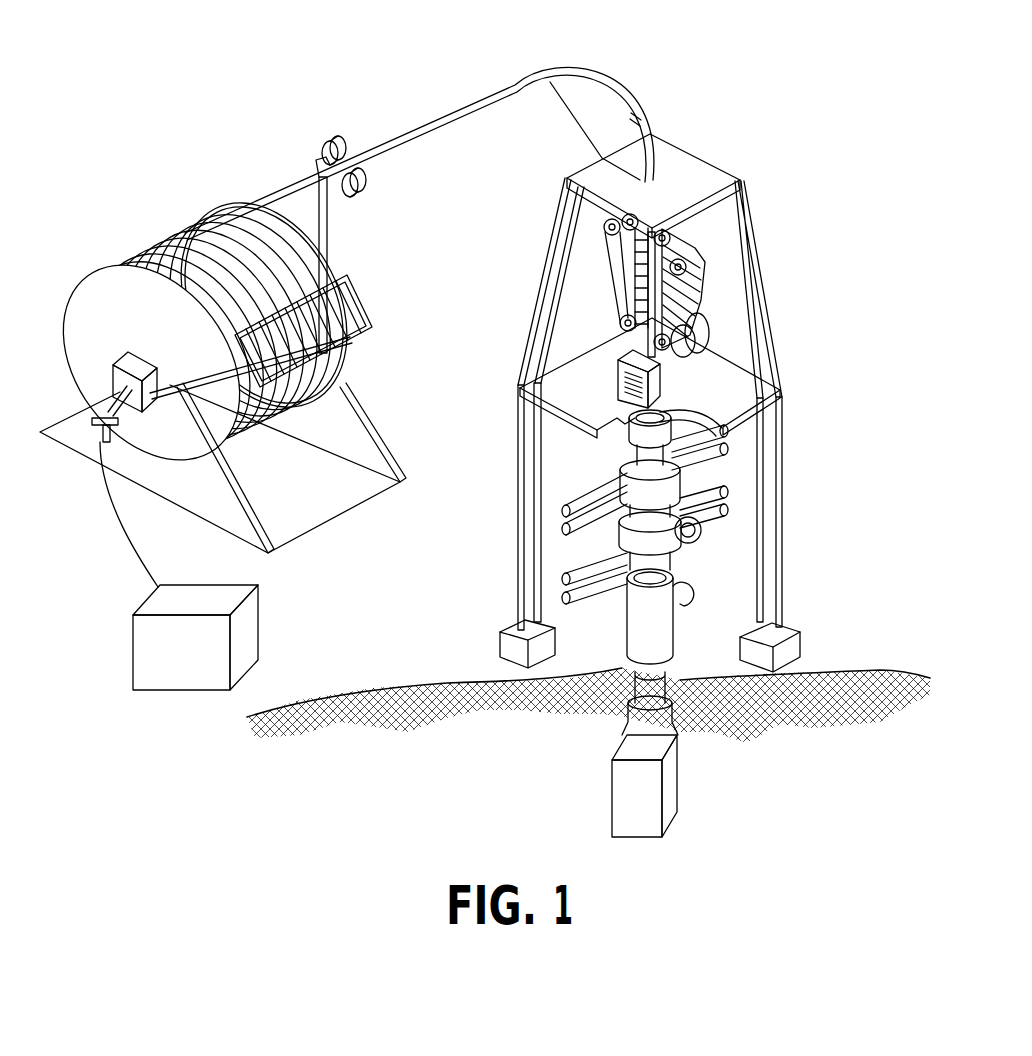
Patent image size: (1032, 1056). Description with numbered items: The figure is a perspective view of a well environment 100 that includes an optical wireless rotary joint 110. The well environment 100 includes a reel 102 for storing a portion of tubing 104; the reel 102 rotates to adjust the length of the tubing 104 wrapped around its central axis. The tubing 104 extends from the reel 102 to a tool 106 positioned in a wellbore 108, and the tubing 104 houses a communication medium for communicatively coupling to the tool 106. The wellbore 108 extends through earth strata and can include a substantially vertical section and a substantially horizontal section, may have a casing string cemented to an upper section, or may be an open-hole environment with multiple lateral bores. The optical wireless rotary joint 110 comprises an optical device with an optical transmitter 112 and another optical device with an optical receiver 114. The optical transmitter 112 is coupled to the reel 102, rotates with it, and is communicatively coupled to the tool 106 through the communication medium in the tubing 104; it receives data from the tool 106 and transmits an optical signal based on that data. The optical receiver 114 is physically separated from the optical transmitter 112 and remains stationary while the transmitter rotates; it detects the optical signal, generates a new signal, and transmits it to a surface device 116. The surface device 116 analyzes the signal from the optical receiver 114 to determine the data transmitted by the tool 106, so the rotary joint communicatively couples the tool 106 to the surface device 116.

The well environment 100 is at (183, 86).
The reel 102 is at (80, 274).
The tubing 104 is at (386, 128).
The tool 106 is at (611, 790).
The wellbore 108 is at (592, 702).
The optical wireless rotary joint 110 is at (74, 407).
The optical transmitter 112 is at (67, 350).
The optical receiver 114 is at (92, 436).
The surface device 116 is at (131, 655).